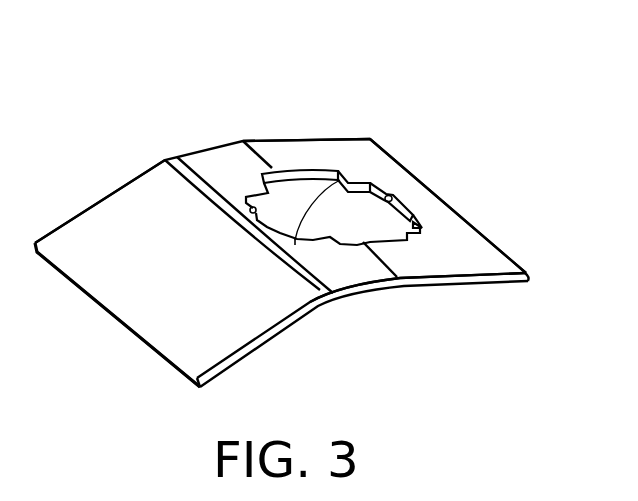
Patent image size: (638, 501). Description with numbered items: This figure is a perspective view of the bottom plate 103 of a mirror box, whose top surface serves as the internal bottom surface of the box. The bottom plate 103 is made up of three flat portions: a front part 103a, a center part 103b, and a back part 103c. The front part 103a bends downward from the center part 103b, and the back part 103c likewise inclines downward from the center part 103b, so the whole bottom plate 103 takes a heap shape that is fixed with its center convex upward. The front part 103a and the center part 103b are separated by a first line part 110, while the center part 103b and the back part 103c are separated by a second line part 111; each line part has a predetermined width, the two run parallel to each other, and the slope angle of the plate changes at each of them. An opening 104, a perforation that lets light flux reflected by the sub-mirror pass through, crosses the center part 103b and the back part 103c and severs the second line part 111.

The bottom plate 103 is at (243, 298).
The front part 103a is at (180, 265).
The center part 103b is at (373, 178).
The back part 103c is at (475, 265).
The opening 104 is at (353, 227).
The first line part 110 is at (211, 202).
The second line part 111 is at (270, 165).